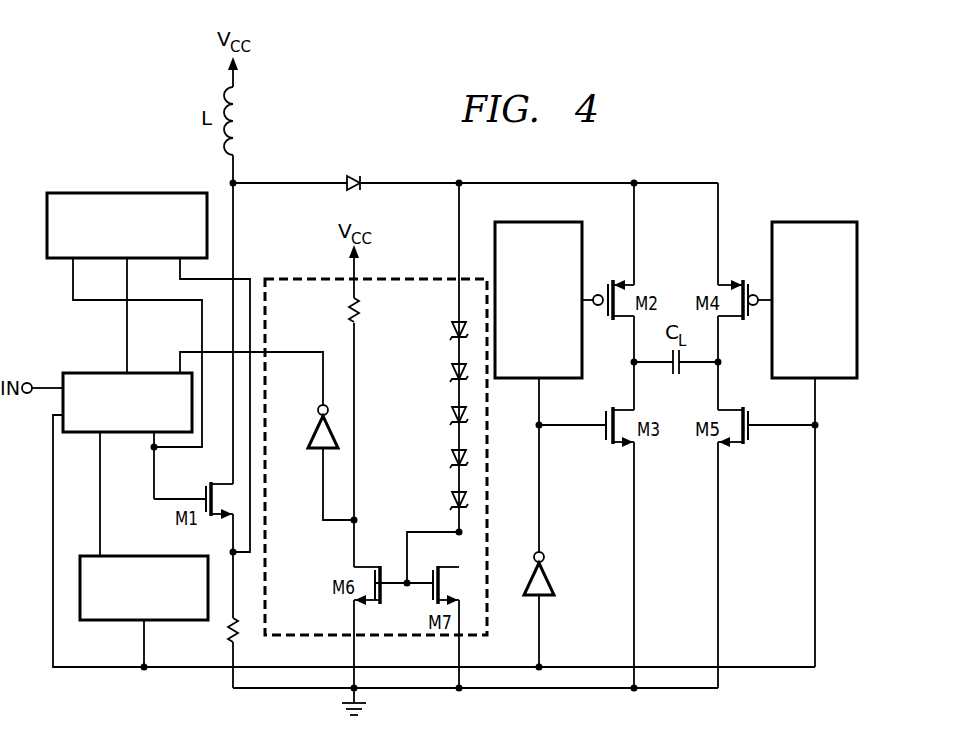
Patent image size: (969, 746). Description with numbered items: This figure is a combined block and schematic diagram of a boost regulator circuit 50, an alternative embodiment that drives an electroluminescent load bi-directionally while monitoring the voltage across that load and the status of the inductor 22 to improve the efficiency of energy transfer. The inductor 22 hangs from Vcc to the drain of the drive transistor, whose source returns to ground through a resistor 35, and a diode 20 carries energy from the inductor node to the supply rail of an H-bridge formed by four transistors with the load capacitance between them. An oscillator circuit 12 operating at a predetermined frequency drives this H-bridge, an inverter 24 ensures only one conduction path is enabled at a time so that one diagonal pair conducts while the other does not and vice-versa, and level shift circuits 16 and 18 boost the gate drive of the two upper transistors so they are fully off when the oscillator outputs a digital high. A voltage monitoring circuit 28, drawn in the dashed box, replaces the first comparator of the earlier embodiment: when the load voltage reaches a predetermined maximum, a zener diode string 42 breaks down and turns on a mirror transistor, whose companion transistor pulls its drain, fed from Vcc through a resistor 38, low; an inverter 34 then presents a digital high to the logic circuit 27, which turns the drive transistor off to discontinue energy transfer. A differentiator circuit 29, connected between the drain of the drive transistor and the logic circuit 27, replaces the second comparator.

The oscillator circuit 12 is at (137, 555).
The level shift circuit 16 is at (549, 359).
The level shift circuit 18 is at (831, 359).
The diode 20 is at (356, 175).
The inductor 22 is at (224, 120).
The inverter 24 is at (548, 577).
The logic circuit 27 is at (112, 372).
The voltage monitoring circuit 28 is at (307, 624).
The differentiator circuit 29 is at (123, 192).
The inverter 34 is at (316, 420).
The resistor 35 is at (228, 635).
The resistor 38 is at (347, 312).
The zener diode string 42 is at (448, 398).
The boost regulator circuit 50 is at (793, 158).